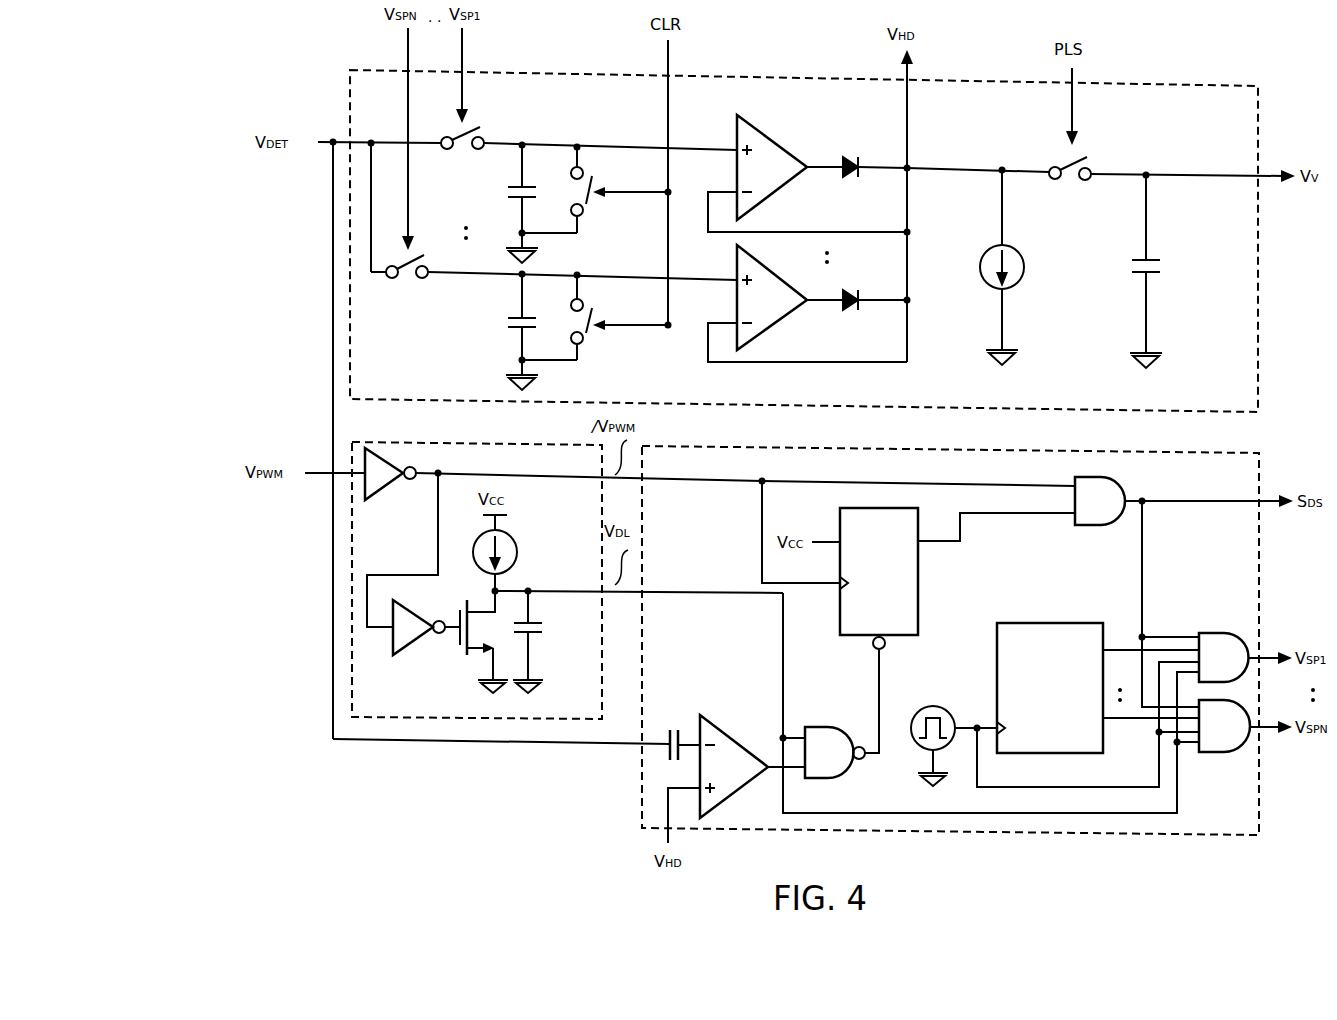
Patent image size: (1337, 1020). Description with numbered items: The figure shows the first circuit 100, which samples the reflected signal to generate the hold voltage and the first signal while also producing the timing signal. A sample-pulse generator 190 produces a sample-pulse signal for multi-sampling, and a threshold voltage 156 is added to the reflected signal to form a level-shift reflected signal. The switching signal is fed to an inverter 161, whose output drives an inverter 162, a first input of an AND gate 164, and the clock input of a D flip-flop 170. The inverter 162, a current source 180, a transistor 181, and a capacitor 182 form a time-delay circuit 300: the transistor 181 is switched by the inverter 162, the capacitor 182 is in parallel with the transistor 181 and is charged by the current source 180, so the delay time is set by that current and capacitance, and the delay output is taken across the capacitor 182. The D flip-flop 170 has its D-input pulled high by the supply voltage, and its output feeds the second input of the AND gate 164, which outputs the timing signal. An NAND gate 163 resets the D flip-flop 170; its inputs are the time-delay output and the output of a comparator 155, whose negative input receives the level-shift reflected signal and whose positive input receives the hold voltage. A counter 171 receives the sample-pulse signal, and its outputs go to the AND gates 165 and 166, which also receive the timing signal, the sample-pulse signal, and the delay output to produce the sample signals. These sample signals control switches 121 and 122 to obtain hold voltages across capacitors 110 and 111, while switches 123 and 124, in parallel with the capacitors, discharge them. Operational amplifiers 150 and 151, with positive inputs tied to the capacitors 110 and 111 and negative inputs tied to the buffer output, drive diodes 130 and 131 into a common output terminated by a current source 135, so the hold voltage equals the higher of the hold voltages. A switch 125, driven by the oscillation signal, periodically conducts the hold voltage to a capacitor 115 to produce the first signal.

The first circuit 100 is at (1258, 45).
The capacitor 110 is at (505, 192).
The capacitor 111 is at (505, 326).
The capacitor 115 is at (1165, 268).
The switch 121 is at (486, 133).
The switch 122 is at (407, 287).
The switch 123 is at (588, 205).
The switch 124 is at (588, 338).
The switch 125 is at (1075, 190).
The diode 130 is at (848, 158).
The diode 131 is at (850, 318).
The current source 135 is at (1025, 275).
The operational amplifier 150 is at (768, 133).
The operational amplifier 151 is at (768, 332).
The comparator 155 is at (732, 733).
The threshold voltage 156 is at (675, 722).
The inverter 161 is at (380, 499).
The inverter 162 is at (405, 652).
The NAND gate 163 is at (822, 725).
The AND gate 164 is at (1097, 528).
The AND gate 165 is at (1220, 631).
The AND gate 166 is at (1220, 758).
The D flip-flop 170 is at (921, 572).
The counter 171 is at (1068, 622).
The current source 180 is at (518, 551).
The transistor 181 is at (462, 652).
The capacitor 182 is at (545, 632).
The sample-pulse generator 190 is at (935, 706).
The delay circuit 300 is at (513, 720).